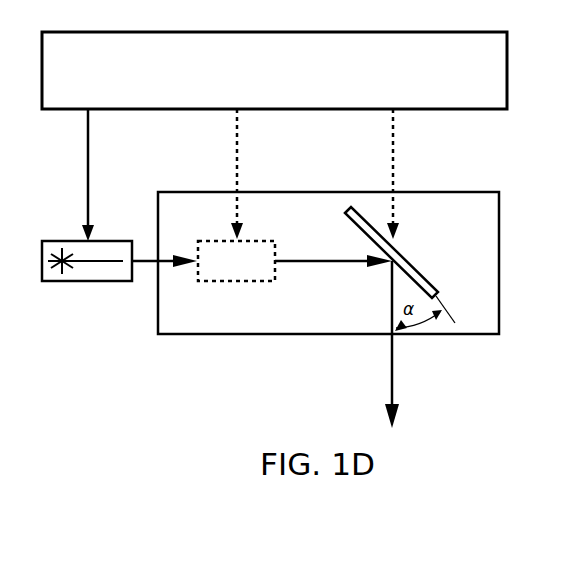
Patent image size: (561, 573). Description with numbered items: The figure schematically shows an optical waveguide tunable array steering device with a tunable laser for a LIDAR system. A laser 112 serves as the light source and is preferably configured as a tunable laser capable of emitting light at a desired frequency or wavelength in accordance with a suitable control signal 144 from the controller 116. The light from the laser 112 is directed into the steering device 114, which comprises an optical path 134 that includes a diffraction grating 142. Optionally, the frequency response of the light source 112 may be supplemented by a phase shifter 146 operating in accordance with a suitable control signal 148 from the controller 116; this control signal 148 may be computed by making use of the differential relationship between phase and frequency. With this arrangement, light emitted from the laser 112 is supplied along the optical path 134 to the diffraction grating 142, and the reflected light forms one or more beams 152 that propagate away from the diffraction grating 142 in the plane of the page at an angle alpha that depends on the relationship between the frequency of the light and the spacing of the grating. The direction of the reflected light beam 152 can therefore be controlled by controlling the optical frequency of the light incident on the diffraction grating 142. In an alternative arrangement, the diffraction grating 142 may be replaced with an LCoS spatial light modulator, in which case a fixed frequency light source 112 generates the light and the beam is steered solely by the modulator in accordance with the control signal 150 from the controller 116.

The controller 116 is at (117, 77).
The control signal 144 is at (89, 160).
The control signal 148 is at (238, 163).
The control signal 150 is at (394, 158).
The steering device 114 is at (490, 192).
The laser 112 is at (102, 283).
The phase shifter 146 is at (220, 283).
The optical path 134 is at (303, 261).
The diffraction grating 142 is at (420, 272).
The reflected light beam 152 is at (394, 383).